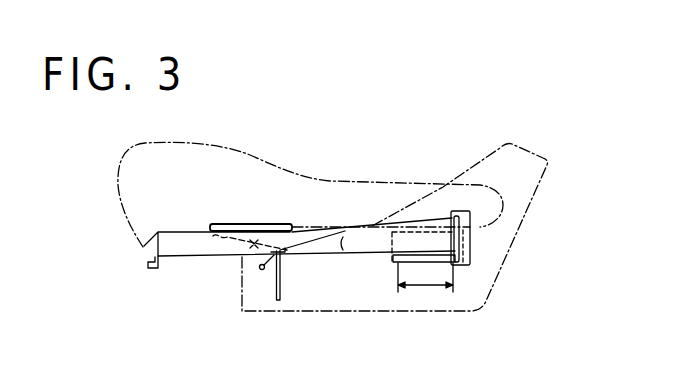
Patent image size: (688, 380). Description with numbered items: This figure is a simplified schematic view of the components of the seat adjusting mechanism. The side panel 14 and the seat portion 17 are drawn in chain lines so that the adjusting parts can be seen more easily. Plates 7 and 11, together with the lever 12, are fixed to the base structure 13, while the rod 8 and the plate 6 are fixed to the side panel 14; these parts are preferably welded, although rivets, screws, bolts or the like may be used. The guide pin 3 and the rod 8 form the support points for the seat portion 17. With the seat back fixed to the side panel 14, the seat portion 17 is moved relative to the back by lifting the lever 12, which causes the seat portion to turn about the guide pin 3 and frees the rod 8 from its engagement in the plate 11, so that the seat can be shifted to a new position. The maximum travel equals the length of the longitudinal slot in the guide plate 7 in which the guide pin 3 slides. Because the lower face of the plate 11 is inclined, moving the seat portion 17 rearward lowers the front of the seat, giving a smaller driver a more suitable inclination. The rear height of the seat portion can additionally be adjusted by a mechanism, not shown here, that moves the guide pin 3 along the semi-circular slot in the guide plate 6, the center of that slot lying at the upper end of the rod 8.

The guide pin 3 is at (467, 267).
The guide plate 6 is at (465, 212).
The guide plate 7 is at (393, 263).
The rod 8 is at (277, 283).
The plate 11 is at (303, 222).
The lever 12 is at (158, 263).
The base structure 13 is at (206, 243).
The side panel 14 is at (532, 241).
The seat portion 17 is at (300, 190).